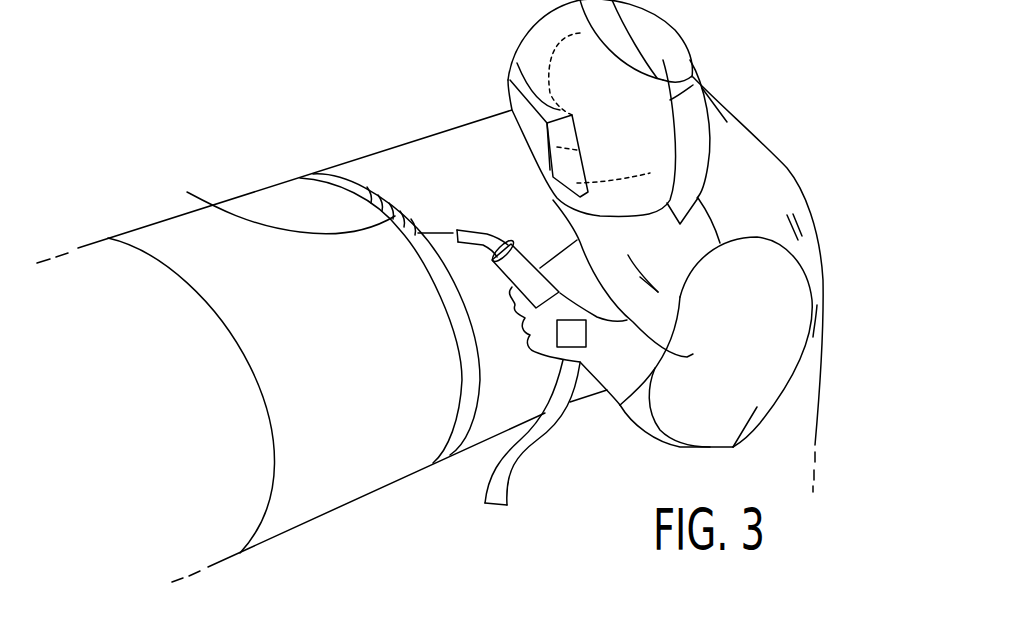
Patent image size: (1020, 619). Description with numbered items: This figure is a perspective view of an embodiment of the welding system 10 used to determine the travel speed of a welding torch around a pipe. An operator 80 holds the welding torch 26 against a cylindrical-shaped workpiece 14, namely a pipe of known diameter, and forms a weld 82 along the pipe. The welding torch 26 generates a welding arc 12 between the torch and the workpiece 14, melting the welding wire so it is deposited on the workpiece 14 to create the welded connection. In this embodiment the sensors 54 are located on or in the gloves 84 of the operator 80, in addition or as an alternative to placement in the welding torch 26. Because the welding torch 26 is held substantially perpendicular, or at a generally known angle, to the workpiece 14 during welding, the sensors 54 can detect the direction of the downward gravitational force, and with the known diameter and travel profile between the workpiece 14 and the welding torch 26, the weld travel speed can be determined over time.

The welding system 10 is at (289, 76).
The welding arc 12 is at (440, 217).
The workpiece 14 is at (360, 475).
The welding torch 26 is at (477, 229).
The sensors 54 is at (587, 333).
The operator 80 is at (787, 168).
The weld 82 is at (275, 205).
The gloves 84 is at (620, 405).